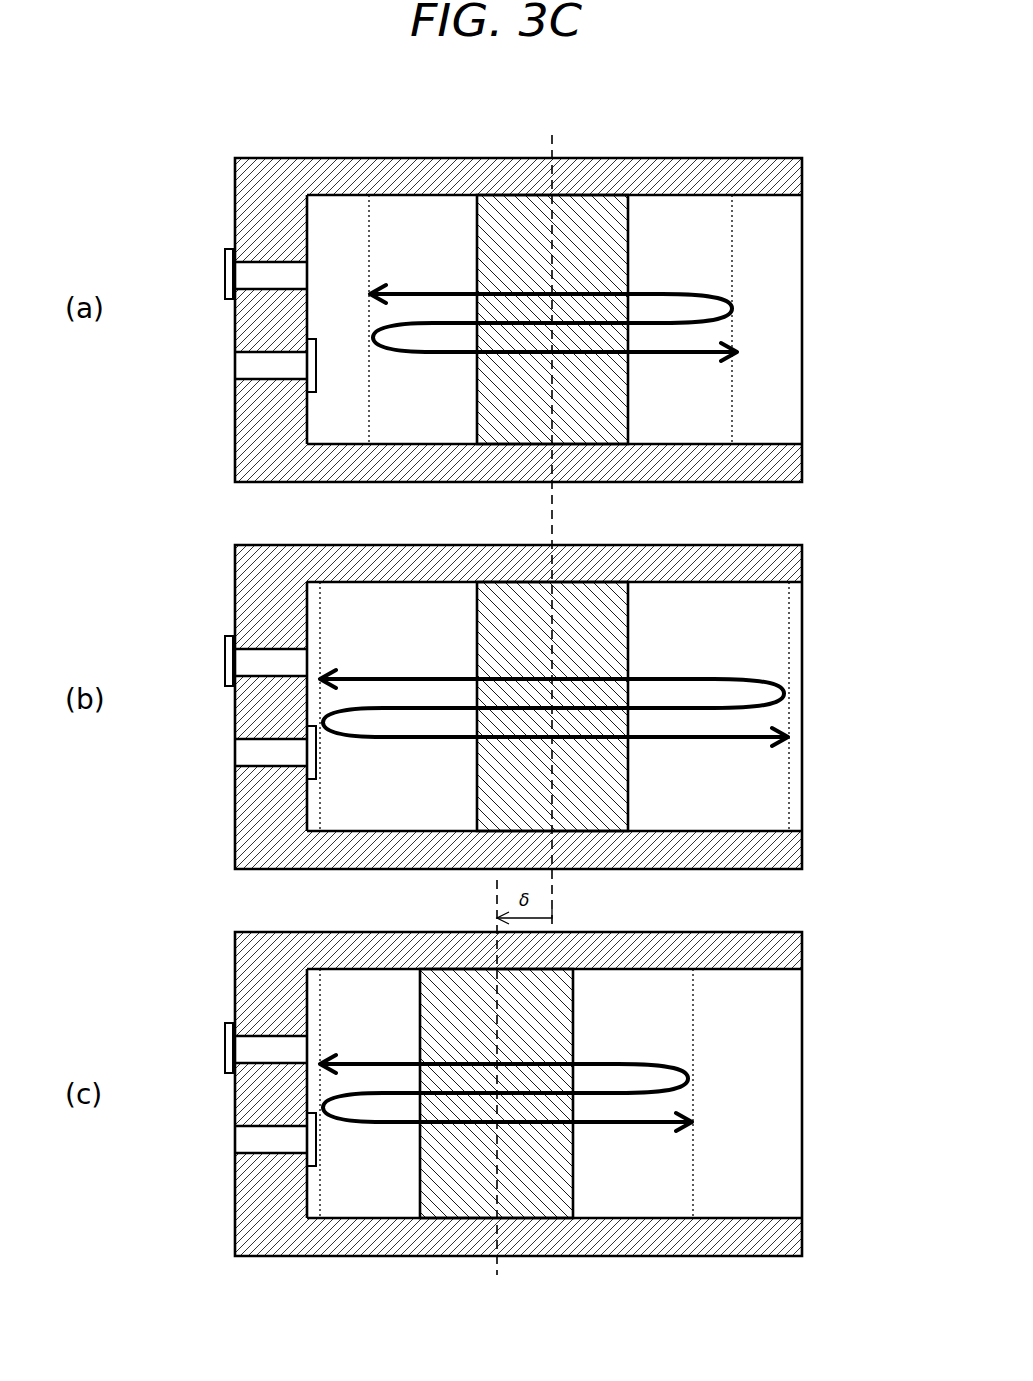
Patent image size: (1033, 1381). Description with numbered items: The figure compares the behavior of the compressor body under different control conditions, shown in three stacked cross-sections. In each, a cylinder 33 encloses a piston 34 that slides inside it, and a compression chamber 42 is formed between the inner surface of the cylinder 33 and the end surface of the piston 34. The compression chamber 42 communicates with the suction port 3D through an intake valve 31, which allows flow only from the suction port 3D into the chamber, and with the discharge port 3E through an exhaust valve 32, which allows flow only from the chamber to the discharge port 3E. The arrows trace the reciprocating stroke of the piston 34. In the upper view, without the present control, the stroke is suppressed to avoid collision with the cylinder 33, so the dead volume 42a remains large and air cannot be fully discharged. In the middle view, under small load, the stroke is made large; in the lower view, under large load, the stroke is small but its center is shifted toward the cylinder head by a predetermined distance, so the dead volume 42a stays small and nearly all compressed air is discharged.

The cylinder 33 is at (298, 172).
The compression chamber 42 is at (420, 220).
The piston 34 is at (513, 222).
The dead volume 42a is at (366, 1021).
The discharge port 3E is at (250, 273).
The suction port 3D is at (250, 367).
The exhaust valve 32 is at (225, 292).
The intake valve 31 is at (319, 368).